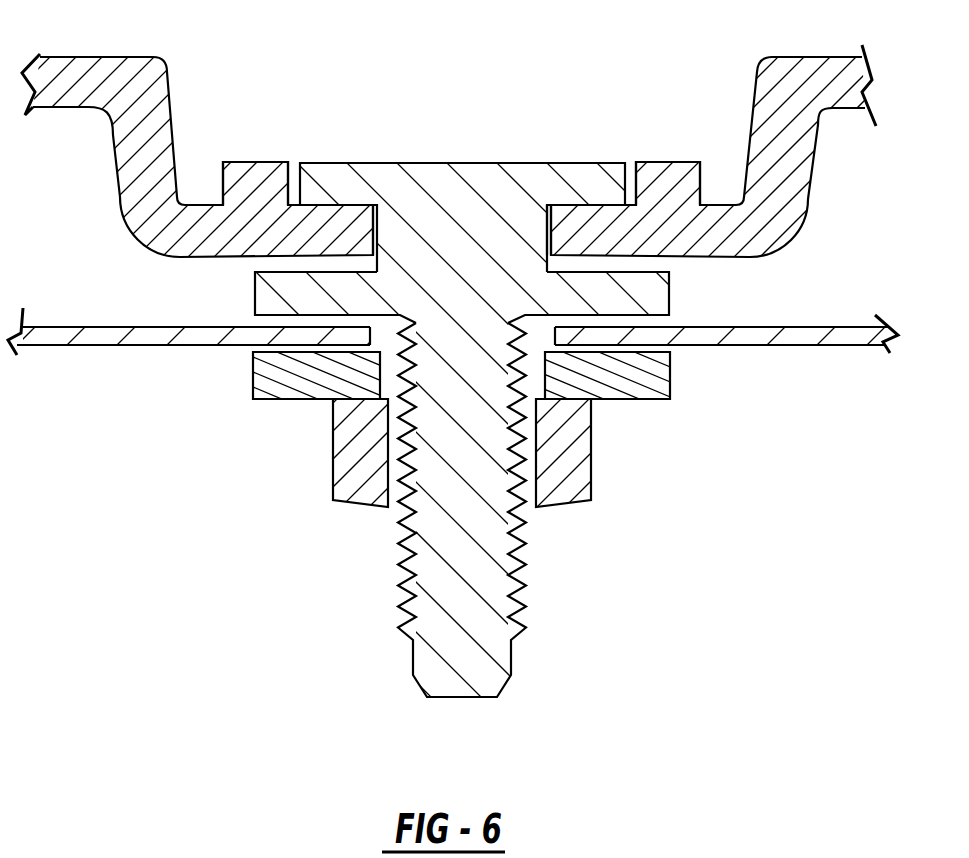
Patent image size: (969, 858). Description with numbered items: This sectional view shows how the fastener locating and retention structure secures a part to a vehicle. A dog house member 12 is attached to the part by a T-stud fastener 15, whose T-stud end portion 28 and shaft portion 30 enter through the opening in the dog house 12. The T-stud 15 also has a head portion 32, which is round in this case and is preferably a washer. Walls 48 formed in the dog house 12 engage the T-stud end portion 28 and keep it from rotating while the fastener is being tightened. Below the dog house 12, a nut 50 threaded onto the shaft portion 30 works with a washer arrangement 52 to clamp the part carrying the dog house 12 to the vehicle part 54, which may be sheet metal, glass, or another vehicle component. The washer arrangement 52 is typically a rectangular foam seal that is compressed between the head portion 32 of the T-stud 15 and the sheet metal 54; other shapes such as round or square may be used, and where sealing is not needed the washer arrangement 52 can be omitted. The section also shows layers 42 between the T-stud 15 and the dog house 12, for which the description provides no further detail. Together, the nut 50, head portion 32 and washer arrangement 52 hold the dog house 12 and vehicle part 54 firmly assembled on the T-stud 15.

The dog house member 12 is at (795, 231).
The T-stud fastener 15 is at (503, 658).
The T-stud end portion 28 is at (465, 163).
The shaft portion 30 is at (548, 225).
The head portion 32 is at (255, 285).
The insulating layer 42 is at (378, 232).
The walls 48 is at (253, 162).
The nut 50 is at (583, 458).
The washer arrangement 52 is at (672, 370).
The vehicle part 54 is at (829, 335).